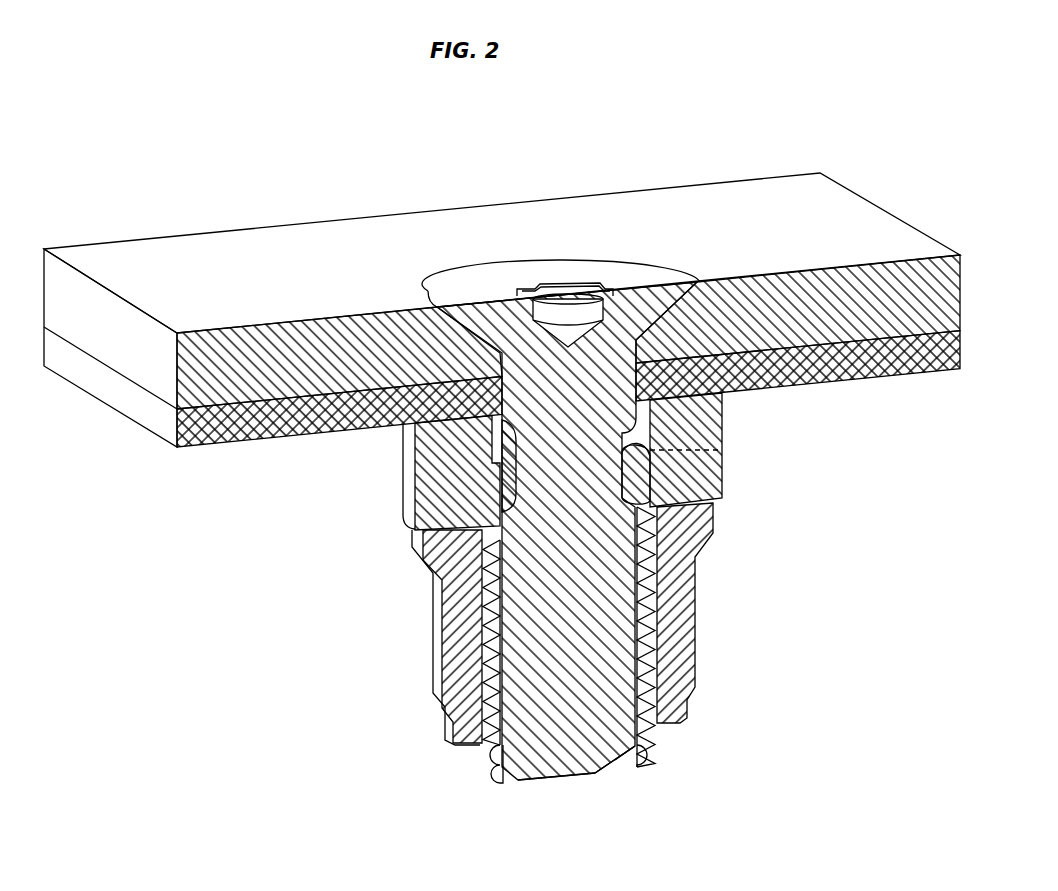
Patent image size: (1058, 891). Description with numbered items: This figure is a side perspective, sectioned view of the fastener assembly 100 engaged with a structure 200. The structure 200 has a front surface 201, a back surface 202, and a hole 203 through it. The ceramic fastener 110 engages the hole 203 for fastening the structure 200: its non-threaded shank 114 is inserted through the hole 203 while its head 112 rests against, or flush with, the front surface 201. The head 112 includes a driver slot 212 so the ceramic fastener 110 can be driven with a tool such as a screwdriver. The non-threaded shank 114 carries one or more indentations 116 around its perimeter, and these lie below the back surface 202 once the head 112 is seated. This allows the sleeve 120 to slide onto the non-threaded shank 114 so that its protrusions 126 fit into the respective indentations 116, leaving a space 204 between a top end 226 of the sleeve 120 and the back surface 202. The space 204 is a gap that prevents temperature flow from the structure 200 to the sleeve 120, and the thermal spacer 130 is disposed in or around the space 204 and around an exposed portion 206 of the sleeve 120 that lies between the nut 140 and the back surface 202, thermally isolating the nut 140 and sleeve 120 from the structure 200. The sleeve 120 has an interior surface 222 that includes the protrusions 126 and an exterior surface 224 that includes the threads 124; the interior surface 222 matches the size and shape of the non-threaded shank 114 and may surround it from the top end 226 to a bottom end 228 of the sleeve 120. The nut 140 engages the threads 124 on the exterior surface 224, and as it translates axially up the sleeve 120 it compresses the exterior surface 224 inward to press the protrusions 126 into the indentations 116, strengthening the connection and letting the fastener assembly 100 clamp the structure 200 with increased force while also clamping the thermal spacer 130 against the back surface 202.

The fastener assembly 100 is at (213, 688).
The ceramic fastener 110 is at (528, 789).
The head 112 is at (638, 275).
The non-threaded shank 114 is at (553, 780).
The indentations 116 is at (504, 453).
The sleeve 120 is at (483, 789).
The threads 124 is at (653, 736).
The protrusions 126 is at (500, 486).
The thermal spacer 130 is at (400, 496).
The nut 140 is at (417, 657).
The structure 200 is at (744, 86).
The front surface 201 is at (148, 262).
The back surface 202 is at (232, 452).
The hole 203 is at (444, 325).
The space 204 is at (693, 405).
The exposed portion 206 is at (707, 454).
The driver slot 212 is at (585, 287).
The interior surface 222 is at (597, 770).
The exterior surface 224 is at (660, 753).
The top end 226 is at (690, 503).
The bottom end 228 is at (622, 750).